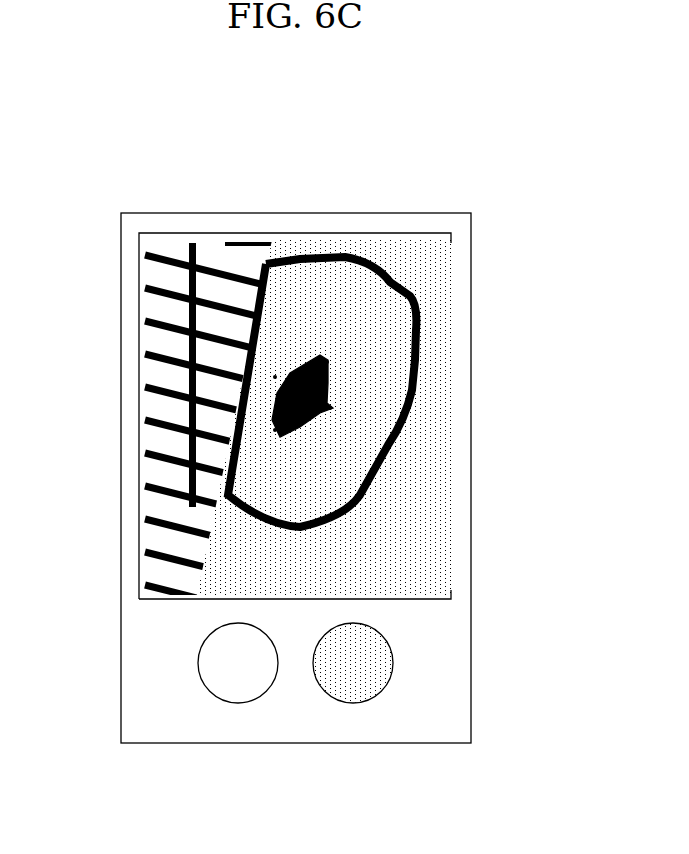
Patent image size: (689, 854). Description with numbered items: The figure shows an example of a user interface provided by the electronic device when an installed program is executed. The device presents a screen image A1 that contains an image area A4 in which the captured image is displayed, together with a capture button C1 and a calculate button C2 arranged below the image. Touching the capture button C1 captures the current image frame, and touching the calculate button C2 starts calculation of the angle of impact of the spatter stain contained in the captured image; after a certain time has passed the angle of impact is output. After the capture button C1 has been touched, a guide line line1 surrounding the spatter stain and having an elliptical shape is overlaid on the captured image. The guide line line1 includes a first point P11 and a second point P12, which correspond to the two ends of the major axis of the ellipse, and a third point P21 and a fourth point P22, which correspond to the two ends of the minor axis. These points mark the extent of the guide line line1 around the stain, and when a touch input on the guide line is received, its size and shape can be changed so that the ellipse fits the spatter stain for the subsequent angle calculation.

The screen image A1 is at (297, 213).
The image display area A4 is at (452, 294).
The guide line line1 is at (328, 386).
The first point P11 is at (327, 362).
The second point P12 is at (275, 430).
The third point P21 is at (275, 377).
The fourth point P22 is at (330, 408).
The capture button C1 is at (238, 703).
The calculate button C2 is at (353, 703).